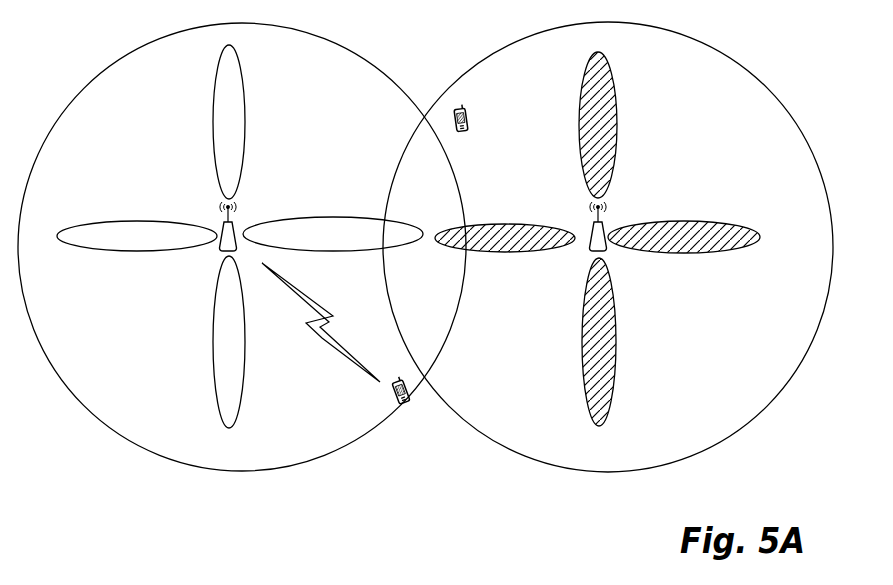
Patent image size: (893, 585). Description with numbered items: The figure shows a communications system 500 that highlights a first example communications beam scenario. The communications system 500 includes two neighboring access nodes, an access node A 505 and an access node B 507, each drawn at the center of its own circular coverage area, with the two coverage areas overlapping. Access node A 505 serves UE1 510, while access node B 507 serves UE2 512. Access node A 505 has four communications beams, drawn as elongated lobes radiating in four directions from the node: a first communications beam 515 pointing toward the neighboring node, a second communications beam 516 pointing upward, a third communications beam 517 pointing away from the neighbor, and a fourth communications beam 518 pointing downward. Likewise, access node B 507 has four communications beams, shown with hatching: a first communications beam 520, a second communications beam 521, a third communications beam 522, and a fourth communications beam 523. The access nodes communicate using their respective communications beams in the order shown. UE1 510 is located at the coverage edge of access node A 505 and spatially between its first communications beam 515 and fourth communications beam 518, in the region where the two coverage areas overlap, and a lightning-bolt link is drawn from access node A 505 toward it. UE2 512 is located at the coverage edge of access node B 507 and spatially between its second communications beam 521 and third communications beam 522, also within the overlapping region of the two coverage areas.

The communications system 500 is at (759, 25).
The access node A 505 is at (207, 212).
The access node B 507 is at (711, 212).
The UE1 510 is at (434, 458).
The UE2 512 is at (515, 137).
The communications beam A(1) 515 is at (378, 208).
The communications beam A(2) 516 is at (203, 98).
The communications beam A(3) 517 is at (90, 308).
The communications beam A(4) 518 is at (207, 439).
The communications beam B(1) 520 is at (779, 308).
The communications beam B(2) 521 is at (650, 91).
The communications beam B(3) 522 is at (512, 305).
The communications beam B(4) 523 is at (577, 435).